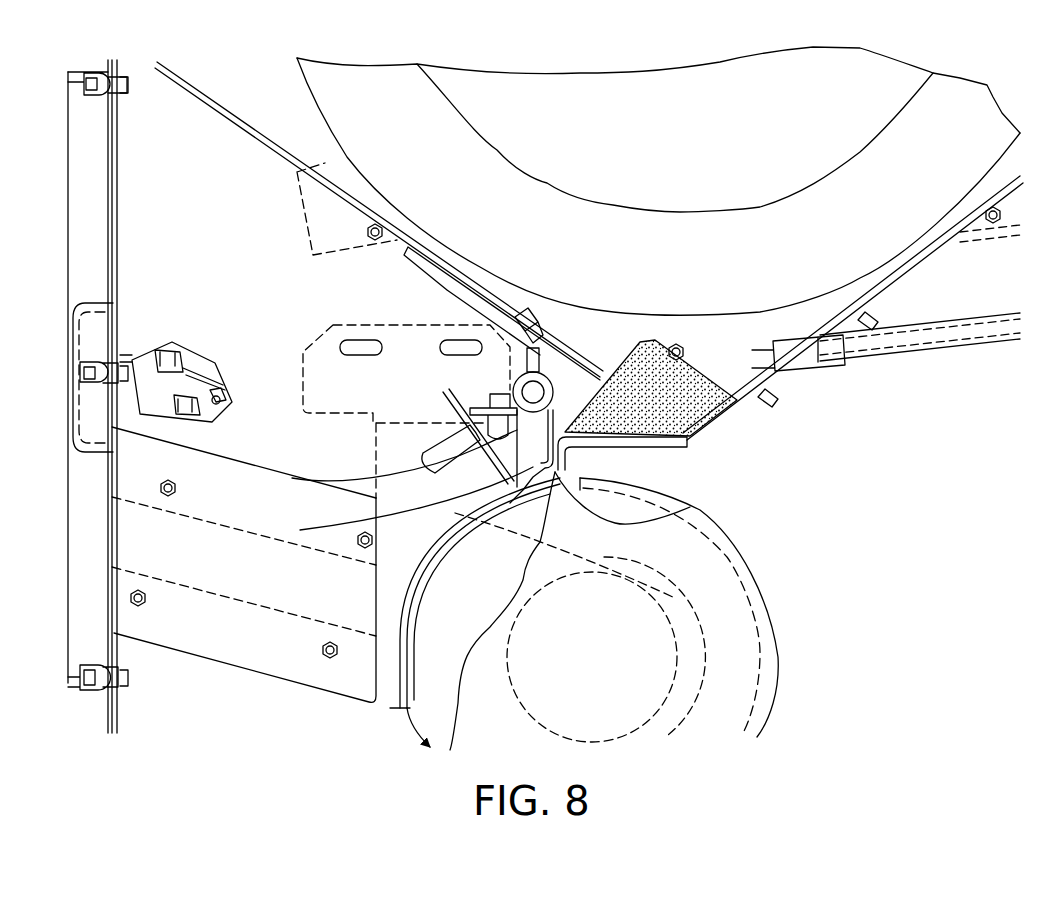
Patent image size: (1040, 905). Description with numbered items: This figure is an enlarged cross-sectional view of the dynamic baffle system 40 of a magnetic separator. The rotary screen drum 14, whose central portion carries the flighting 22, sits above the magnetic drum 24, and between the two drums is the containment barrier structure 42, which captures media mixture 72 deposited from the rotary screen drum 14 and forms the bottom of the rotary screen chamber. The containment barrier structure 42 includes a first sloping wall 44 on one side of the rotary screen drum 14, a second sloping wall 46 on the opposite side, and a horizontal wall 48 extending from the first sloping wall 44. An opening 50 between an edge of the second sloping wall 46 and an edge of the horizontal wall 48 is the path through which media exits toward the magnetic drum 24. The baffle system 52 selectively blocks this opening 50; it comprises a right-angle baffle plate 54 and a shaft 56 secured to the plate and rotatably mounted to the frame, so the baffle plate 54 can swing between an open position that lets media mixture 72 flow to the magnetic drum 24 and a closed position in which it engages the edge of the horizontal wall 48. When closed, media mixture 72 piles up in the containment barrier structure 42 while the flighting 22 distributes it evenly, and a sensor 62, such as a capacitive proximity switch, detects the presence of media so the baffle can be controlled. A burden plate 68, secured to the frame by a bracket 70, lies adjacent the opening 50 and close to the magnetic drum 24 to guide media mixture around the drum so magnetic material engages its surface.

The rotary screen drum 14 is at (477, 97).
The flighting 22 is at (298, 118).
The magnetic drum 24 is at (733, 613).
The dynamic baffle system 40 is at (510, 275).
The containment barrier structure 42 is at (727, 430).
The first sloping wall 44 is at (788, 363).
The second sloping wall 46 is at (382, 232).
The horizontal wall 48 is at (650, 447).
The opening 50 is at (690, 507).
The baffle system 52 is at (490, 383).
The baffle plate 54 is at (455, 468).
The shaft 56 is at (470, 411).
The sensor 62 is at (838, 368).
The burden plate 68 is at (473, 513).
The bracket 70 is at (312, 357).
The media mixture 72 is at (637, 362).